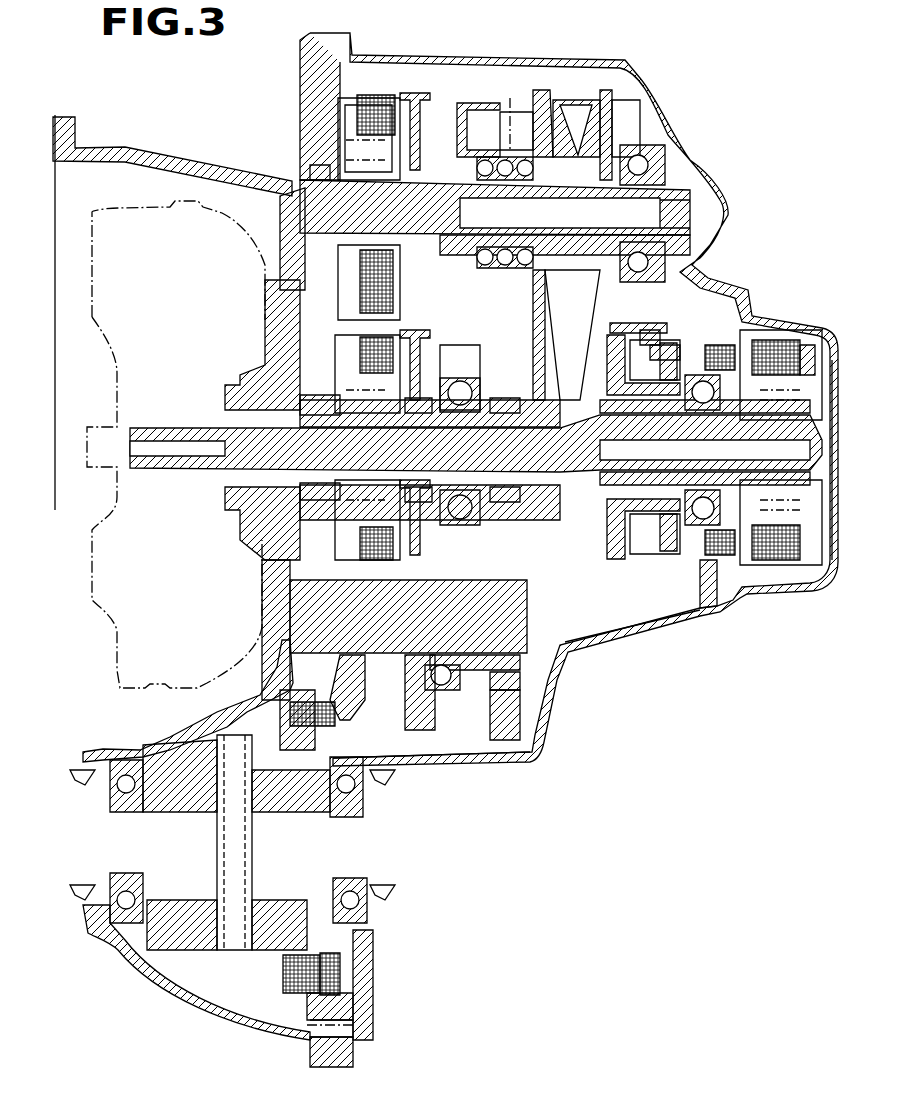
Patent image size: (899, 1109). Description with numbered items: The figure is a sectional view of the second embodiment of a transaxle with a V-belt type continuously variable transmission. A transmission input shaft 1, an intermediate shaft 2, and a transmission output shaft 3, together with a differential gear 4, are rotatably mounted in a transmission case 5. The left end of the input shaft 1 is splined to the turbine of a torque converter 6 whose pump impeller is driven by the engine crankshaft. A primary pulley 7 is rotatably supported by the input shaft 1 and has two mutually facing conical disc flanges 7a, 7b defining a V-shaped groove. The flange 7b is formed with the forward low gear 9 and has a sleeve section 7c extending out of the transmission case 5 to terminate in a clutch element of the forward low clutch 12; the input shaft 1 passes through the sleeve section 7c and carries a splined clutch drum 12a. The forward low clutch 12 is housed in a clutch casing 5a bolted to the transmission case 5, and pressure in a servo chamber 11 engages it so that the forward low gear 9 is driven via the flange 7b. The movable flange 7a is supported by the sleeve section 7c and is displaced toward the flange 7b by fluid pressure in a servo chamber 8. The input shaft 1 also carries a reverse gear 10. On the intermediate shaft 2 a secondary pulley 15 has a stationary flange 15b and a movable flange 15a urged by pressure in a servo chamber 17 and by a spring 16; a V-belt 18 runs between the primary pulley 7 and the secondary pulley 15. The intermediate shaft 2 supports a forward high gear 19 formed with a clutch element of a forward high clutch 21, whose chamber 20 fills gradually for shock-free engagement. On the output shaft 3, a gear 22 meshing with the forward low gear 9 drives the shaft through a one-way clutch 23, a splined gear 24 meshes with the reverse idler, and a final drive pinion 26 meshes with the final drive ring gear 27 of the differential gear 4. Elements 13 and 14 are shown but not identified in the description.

The transmission input shaft 1 is at (163, 440).
The intermediate shaft 2 is at (305, 185).
The transmission output shaft 3 is at (515, 620).
The differential gear 4 is at (260, 965).
The transmission case 5 is at (672, 158).
The clutch casing 5a is at (743, 590).
The torque converter 6 is at (112, 232).
The primary pulley 7 is at (612, 600).
The movable conical disc flange 7a is at (590, 565).
The stationary conical disc flange 7b is at (545, 565).
The sleeve section 7c is at (740, 365).
The servo chamber 8 is at (680, 305).
The forward low gear 9 is at (505, 398).
The reverse gear 10 is at (416, 398).
The servo chamber 11 is at (836, 545).
The forward low clutch 12 is at (800, 560).
The clutch drum 12a is at (798, 345).
The housing member 13 is at (262, 352).
The hub 14 is at (325, 540).
The secondary pulley 15 is at (615, 100).
The movable conical disc flange 15a is at (545, 92).
The stationary conical disc flange 15b is at (618, 125).
The spring 16 is at (510, 100).
The servo chamber 17 is at (458, 105).
The V-belt 18 is at (572, 100).
The forward high gear 19 is at (418, 92).
The chamber 20 is at (312, 165).
The forward high clutch 21 is at (380, 85).
The gear 22 is at (522, 755).
The one-way clutch 23 is at (515, 680).
The gear 24 is at (425, 725).
The final drive pinion 26 is at (370, 700).
The final drive ring gear 27 is at (347, 1012).